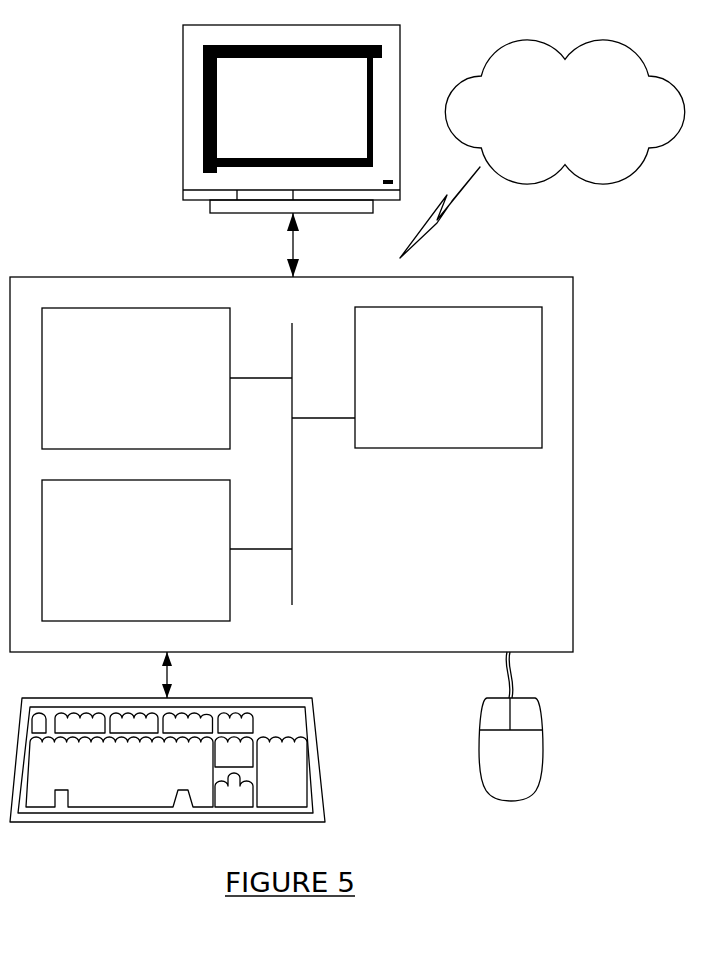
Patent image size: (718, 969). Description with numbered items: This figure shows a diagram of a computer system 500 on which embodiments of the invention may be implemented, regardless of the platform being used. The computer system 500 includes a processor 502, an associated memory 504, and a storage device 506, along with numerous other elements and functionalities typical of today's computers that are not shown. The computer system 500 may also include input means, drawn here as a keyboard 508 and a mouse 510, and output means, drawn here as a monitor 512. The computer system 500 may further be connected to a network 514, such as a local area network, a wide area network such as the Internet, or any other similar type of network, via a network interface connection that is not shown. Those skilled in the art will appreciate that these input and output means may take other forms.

The computer system 500 is at (592, 336).
The processor 502 is at (428, 389).
The memory 504 is at (116, 389).
The storage device 506 is at (116, 560).
The keyboard 508 is at (101, 784).
The mouse 510 is at (491, 771).
The monitor 512 is at (274, 129).
The network 514 is at (546, 123).